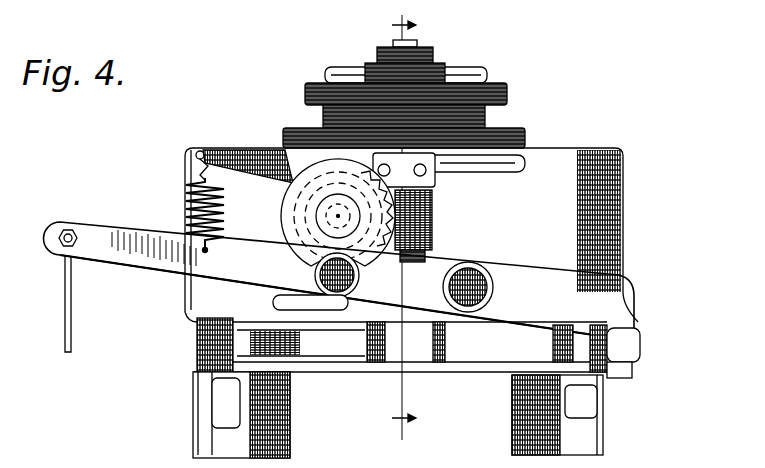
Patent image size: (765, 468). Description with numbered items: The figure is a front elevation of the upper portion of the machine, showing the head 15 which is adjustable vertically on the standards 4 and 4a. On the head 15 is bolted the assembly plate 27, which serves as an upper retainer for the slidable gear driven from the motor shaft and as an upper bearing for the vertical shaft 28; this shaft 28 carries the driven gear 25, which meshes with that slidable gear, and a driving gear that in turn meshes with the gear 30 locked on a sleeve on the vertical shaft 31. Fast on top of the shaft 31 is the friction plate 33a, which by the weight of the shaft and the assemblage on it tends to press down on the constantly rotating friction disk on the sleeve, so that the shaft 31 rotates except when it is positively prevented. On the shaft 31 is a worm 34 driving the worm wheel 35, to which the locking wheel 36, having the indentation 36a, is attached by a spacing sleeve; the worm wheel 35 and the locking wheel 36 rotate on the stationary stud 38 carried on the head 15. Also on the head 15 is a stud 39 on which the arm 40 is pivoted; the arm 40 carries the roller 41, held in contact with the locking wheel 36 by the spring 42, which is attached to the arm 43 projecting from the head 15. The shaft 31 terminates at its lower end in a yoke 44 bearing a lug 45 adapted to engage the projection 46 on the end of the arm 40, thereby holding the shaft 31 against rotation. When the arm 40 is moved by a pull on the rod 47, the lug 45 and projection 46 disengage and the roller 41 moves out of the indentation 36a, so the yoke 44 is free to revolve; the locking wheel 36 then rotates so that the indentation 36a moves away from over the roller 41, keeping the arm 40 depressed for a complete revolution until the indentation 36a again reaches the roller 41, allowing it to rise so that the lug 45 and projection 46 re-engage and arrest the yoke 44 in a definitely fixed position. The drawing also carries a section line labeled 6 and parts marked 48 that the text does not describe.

The standard 4 is at (203, 428).
The standard 4a is at (603, 418).
The section line 6 is at (404, 230).
The head 15 is at (411, 235).
The driven gear 25 is at (490, 118).
The assembly plate 27 is at (338, 52).
The vertical shaft 28 is at (418, 43).
The gear 30 is at (528, 140).
The vertical shaft 31 is at (434, 58).
The friction plate 33a is at (507, 93).
The worm 34 is at (433, 225).
The worm wheel 35 is at (298, 206).
The locking wheel 36 is at (300, 163).
The indentation 36a is at (317, 262).
The stationary stud 38 is at (326, 222).
The stud 39 is at (471, 284).
The arm 40 is at (110, 238).
The roller 41 is at (337, 298).
The spring 42 is at (186, 190).
The arm 43 is at (218, 150).
The yoke 44 is at (413, 332).
The lug 45 is at (620, 372).
The projection 46 is at (629, 334).
The rod 47 is at (72, 324).
The clip 48 is at (225, 402).